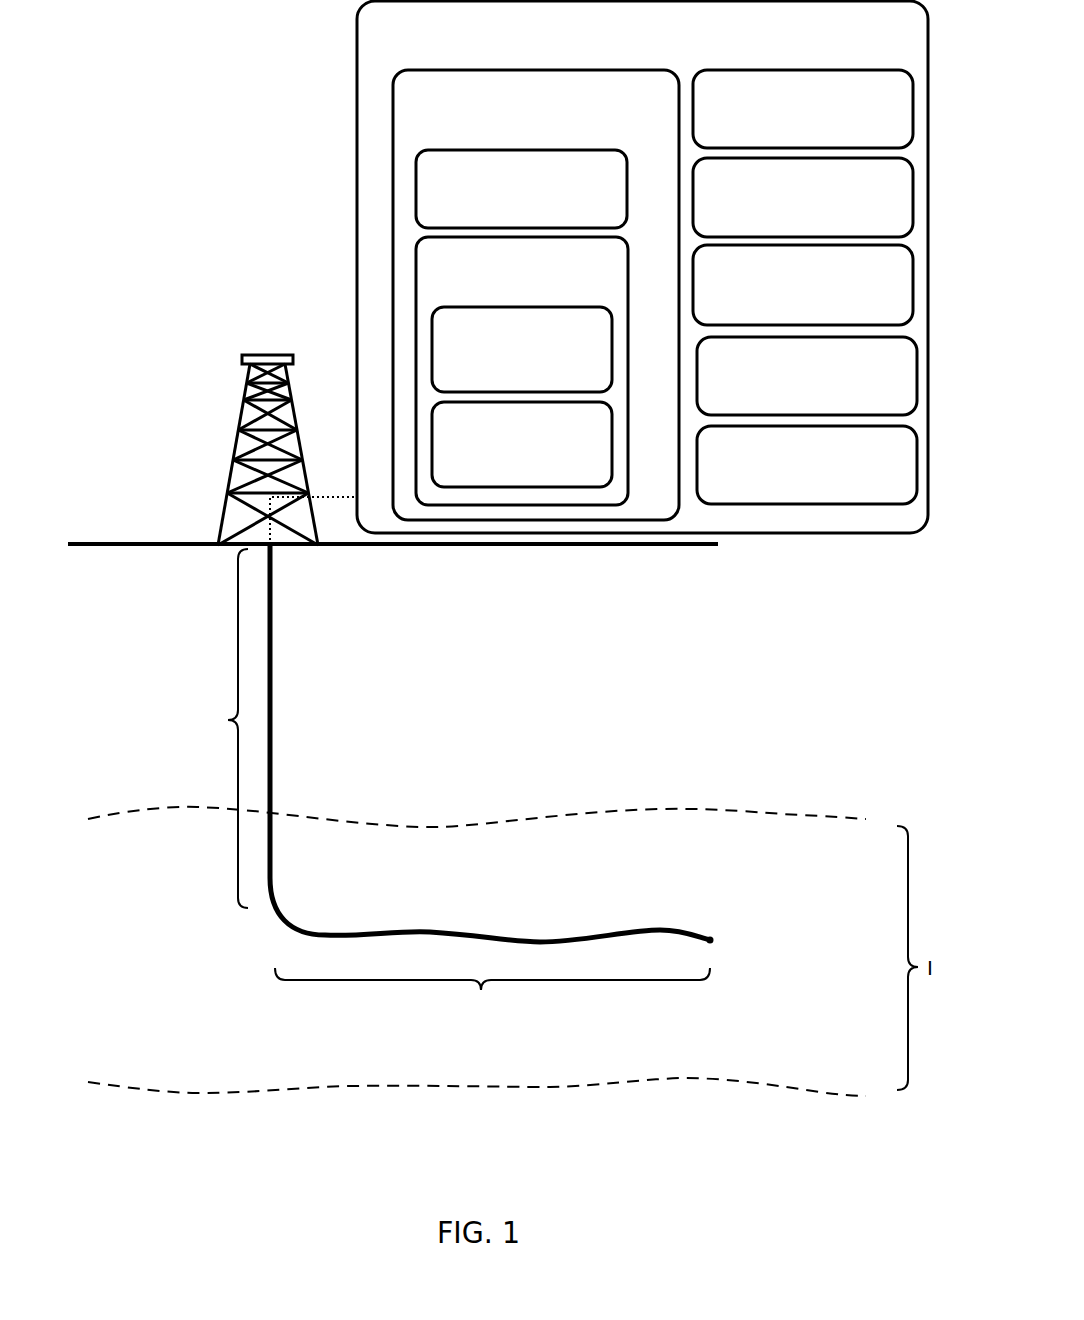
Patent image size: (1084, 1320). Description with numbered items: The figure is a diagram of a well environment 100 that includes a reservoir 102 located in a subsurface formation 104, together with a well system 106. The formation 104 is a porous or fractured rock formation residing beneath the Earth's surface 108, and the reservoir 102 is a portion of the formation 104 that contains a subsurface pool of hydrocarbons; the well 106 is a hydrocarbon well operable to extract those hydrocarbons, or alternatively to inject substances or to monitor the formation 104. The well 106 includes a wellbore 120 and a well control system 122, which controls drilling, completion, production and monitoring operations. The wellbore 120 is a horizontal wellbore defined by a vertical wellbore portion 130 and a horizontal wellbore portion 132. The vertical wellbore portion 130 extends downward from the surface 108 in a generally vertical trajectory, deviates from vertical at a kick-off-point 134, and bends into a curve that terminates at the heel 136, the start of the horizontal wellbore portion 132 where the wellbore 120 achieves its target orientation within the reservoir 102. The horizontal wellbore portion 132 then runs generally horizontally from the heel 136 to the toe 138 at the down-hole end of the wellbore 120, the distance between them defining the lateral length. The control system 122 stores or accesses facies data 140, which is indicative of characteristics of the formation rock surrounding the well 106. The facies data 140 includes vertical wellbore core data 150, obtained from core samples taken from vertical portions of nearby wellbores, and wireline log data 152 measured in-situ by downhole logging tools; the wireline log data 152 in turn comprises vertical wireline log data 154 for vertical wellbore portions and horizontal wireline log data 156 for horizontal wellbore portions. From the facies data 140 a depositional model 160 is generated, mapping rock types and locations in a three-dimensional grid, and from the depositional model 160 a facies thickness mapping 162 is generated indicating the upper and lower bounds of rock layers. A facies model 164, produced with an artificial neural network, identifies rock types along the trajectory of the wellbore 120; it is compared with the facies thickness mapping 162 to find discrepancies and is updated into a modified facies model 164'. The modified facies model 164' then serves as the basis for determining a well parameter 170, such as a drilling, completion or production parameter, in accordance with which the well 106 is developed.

The well environment 100 is at (144, 263).
The reservoir 102 is at (135, 998).
The subsurface formation 104 is at (143, 755).
The well system 106 is at (163, 476).
The Earth's surface 108 is at (493, 550).
The wellbore 120 is at (300, 714).
The well control system 122 is at (400, 48).
The vertical wellbore portion 130 is at (216, 728).
The horizontal wellbore portion 132 is at (492, 998).
The kick-off-point 134 is at (274, 908).
The heel 136 is at (320, 934).
The toe 138 is at (710, 940).
The facies data 140 is at (438, 125).
The vertical wellbore core data 150 is at (539, 222).
The wireline log data 152 is at (461, 290).
The vertical wireline log data 154 is at (539, 381).
The horizontal wireline log data 156 is at (539, 476).
The depositional model 160 is at (819, 131).
The facies thickness mapping 162 is at (819, 231).
The facies model 164 is at (803, 285).
The modified facies model 164' is at (807, 376).
The well parameter 170 is at (819, 488).